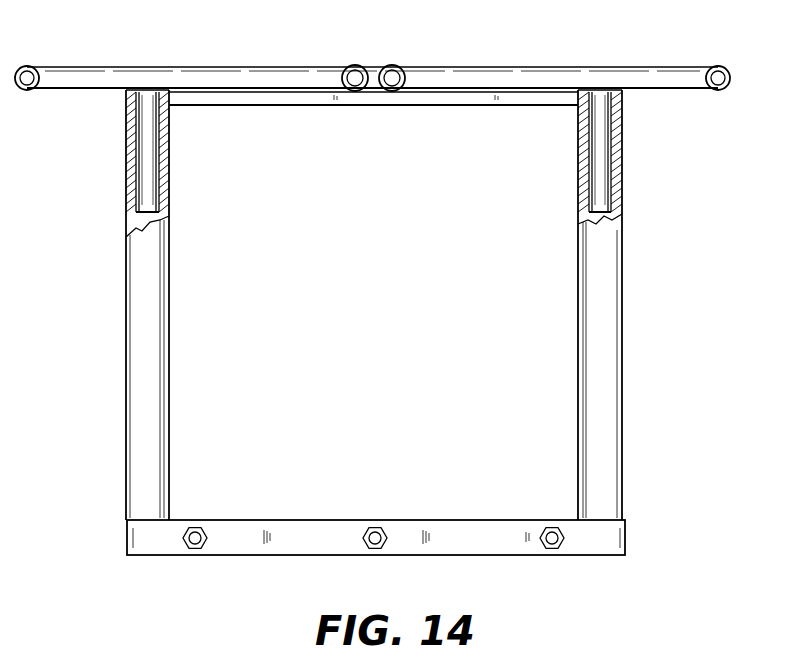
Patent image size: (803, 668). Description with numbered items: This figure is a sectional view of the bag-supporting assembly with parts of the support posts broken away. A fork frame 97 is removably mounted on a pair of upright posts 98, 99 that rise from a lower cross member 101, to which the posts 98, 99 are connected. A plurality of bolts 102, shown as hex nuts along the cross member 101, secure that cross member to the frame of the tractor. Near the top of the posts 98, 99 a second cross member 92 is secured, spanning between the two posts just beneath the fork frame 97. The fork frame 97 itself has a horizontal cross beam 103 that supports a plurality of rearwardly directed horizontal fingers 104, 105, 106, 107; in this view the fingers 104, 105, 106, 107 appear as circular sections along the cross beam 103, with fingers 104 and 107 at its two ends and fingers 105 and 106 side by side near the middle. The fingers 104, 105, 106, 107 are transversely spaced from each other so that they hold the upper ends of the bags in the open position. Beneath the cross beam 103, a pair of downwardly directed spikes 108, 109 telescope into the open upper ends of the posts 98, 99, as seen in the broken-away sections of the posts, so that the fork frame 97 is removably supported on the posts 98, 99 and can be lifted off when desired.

The cross member 92 is at (275, 100).
The fork frame 97 is at (510, 60).
The upright post 98 is at (145, 305).
The upright post 99 is at (634, 305).
The cross member 101 is at (323, 533).
The bolts 102 is at (195, 526).
The cross beam 103 is at (200, 80).
The finger 104 is at (27, 66).
The finger 105 is at (352, 66).
The finger 106 is at (392, 66).
The finger 107 is at (721, 67).
The spike 108 is at (146, 157).
The spike 109 is at (634, 152).